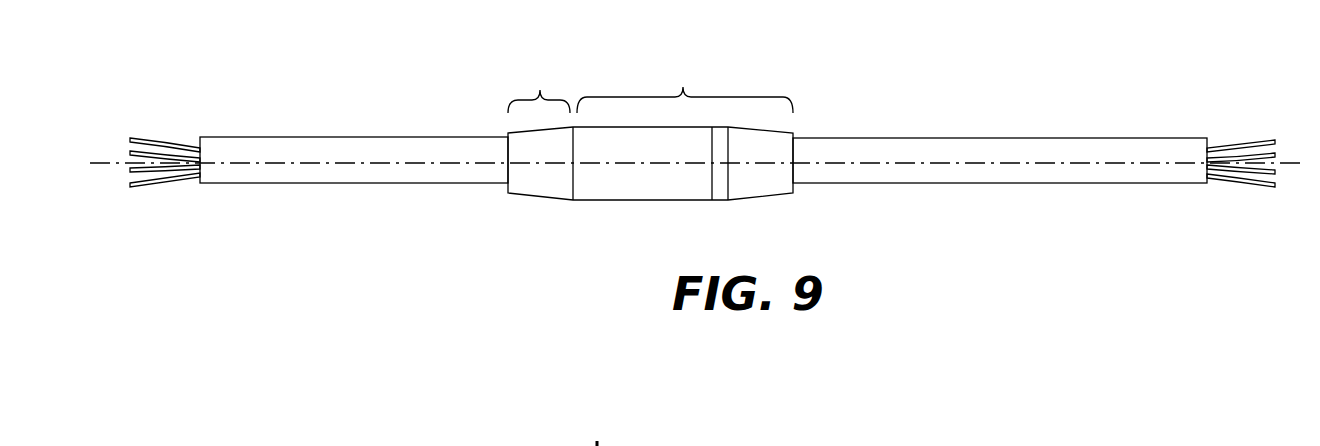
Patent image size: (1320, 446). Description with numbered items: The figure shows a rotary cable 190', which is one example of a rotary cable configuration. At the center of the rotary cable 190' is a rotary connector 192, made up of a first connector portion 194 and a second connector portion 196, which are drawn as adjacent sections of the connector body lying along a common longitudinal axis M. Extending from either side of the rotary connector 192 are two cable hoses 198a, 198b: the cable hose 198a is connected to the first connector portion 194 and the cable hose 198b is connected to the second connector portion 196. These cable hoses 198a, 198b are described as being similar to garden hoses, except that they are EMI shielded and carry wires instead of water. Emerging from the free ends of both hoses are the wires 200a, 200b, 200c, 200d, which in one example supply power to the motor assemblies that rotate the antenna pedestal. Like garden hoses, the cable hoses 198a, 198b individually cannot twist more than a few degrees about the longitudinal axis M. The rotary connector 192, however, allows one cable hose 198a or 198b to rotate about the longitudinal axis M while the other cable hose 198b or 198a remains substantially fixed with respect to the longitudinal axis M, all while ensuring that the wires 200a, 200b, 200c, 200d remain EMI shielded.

The rotary cable 190' is at (697, 89).
The rotary connector 192 is at (627, 200).
The first connector portion 194 is at (685, 88).
The second connector portion 196 is at (539, 88).
The cable hose 198a is at (1002, 138).
The cable hose 198b is at (347, 137).
The wire 200a is at (145, 137).
The wire 200b is at (165, 153).
The wire 200c is at (172, 172).
The wire 200d is at (142, 188).
The longitudinal axis M is at (933, 163).